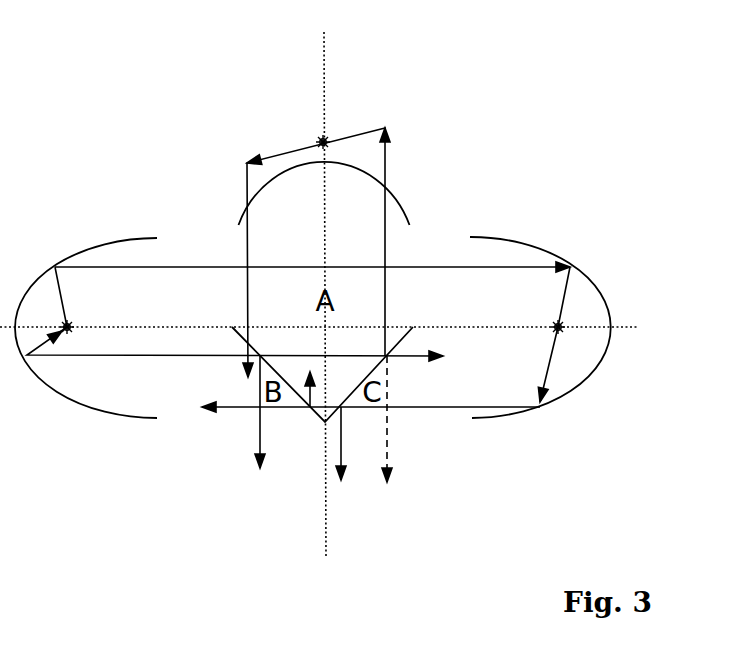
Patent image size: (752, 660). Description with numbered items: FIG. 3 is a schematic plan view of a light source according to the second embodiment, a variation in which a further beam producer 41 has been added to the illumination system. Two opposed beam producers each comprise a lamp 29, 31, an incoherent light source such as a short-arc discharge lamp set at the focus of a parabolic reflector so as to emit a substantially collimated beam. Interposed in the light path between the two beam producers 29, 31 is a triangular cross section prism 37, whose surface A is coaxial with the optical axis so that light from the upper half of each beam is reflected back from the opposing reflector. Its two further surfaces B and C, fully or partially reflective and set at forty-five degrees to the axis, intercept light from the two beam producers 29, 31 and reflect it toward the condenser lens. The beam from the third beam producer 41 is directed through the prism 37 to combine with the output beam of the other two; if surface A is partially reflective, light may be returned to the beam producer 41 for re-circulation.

The lamp 29 is at (103, 238).
The lamp 31 is at (542, 243).
The further beam producer 41 is at (365, 98).
The triangular cross section prism 37 is at (228, 368).